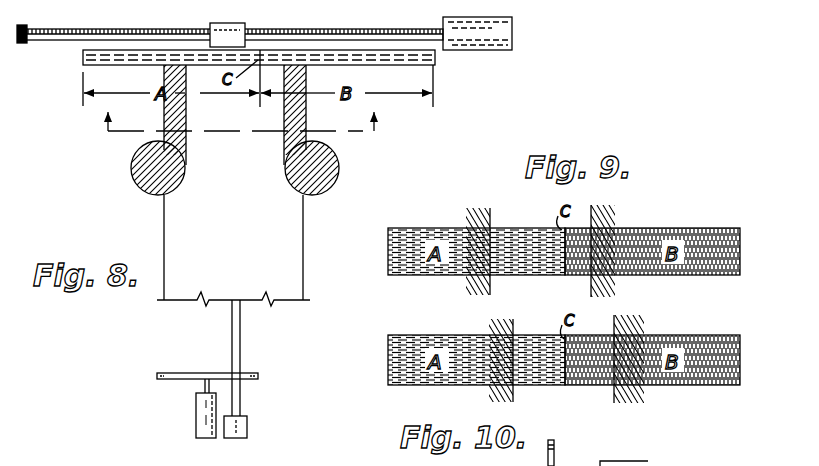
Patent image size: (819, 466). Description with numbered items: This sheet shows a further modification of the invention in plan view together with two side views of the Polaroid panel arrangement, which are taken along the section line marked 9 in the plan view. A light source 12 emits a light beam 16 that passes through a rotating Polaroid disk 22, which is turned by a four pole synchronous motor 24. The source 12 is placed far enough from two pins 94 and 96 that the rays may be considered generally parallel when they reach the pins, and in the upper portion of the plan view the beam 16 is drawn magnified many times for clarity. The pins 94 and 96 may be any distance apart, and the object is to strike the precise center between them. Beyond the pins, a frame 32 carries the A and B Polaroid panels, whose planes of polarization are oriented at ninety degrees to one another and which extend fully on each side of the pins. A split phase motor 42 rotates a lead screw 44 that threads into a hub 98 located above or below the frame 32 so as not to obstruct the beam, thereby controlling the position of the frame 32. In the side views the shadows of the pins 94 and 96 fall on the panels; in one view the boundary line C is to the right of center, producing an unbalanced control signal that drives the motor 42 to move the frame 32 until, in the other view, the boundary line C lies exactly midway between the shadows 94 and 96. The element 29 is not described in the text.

In FIG. 8, the screw 44 is at (398, 28).
In FIG. 8, the hub 98 is at (238, 24).
In FIG. 8, the split phase motor 42 is at (512, 27).
In FIG. 8, the frame 32 is at (82, 58).
In FIG. 8, the pin 94 is at (150, 186).
In FIG. 9, the pin 94 is at (478, 208).
In FIG. 10, the pin 94 is at (501, 318).
In FIG. 8, the pin 96 is at (330, 183).
In FIG. 9, the pin 96 is at (601, 207).
In FIG. 10, the pin 96 is at (624, 317).
In FIG. 8, the section line 9- 9 is at (238, 143).
In FIG. 8, the light beam 16 is at (303, 255).
In FIG. 8, the rotating Polaroid disk 22 is at (190, 349).
In FIG. 10, the rotating Polaroid disk 22 is at (555, 452).
In FIG. 8, the four pole synchronous motor 24 is at (198, 418).
In FIG. 8, the light source 12 is at (248, 428).
In FIG. 10, the bracket 29 is at (622, 462).